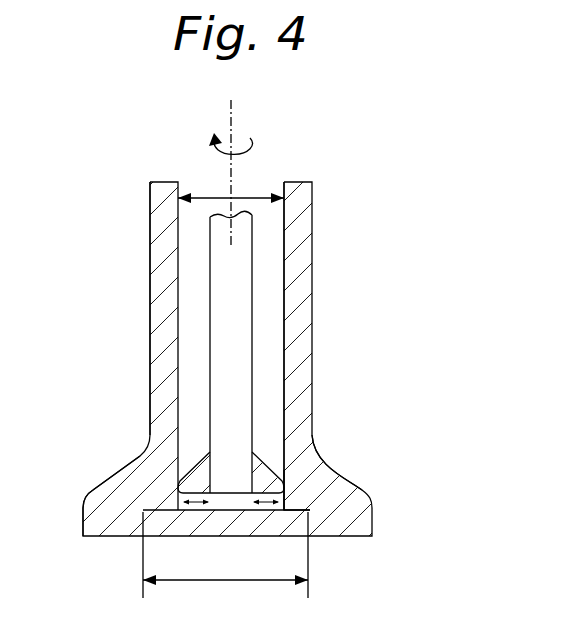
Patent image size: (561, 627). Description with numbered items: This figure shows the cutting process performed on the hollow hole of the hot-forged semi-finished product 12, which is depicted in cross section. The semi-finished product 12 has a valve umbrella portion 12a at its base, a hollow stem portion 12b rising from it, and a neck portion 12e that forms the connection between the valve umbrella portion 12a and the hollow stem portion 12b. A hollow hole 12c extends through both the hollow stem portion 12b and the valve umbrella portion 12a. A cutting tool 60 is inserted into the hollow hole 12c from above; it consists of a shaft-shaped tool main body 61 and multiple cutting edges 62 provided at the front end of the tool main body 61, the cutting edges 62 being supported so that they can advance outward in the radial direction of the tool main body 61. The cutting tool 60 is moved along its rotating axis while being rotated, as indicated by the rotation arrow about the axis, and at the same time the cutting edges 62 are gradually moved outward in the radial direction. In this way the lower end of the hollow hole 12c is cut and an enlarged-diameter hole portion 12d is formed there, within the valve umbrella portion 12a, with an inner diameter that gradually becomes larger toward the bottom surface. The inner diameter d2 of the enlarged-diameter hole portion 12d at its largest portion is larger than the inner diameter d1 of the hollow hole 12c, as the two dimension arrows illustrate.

The semi-finished product 12 is at (321, 245).
The valve umbrella portion 12a is at (102, 486).
The hollow stem portion 12b is at (150, 338).
The hollow hole 12c is at (284, 321).
The enlarged-diameter hole portion 12d is at (296, 490).
The neck portion 12e is at (313, 448).
The cutting tool 60 is at (280, 310).
The tool main body 61 is at (210, 292).
The cutting edges 62 is at (190, 470).
The inner diameter of the hollow hole d1 is at (262, 198).
The inner diameter of the enlarged-diameter hole portion d2 is at (225, 555).